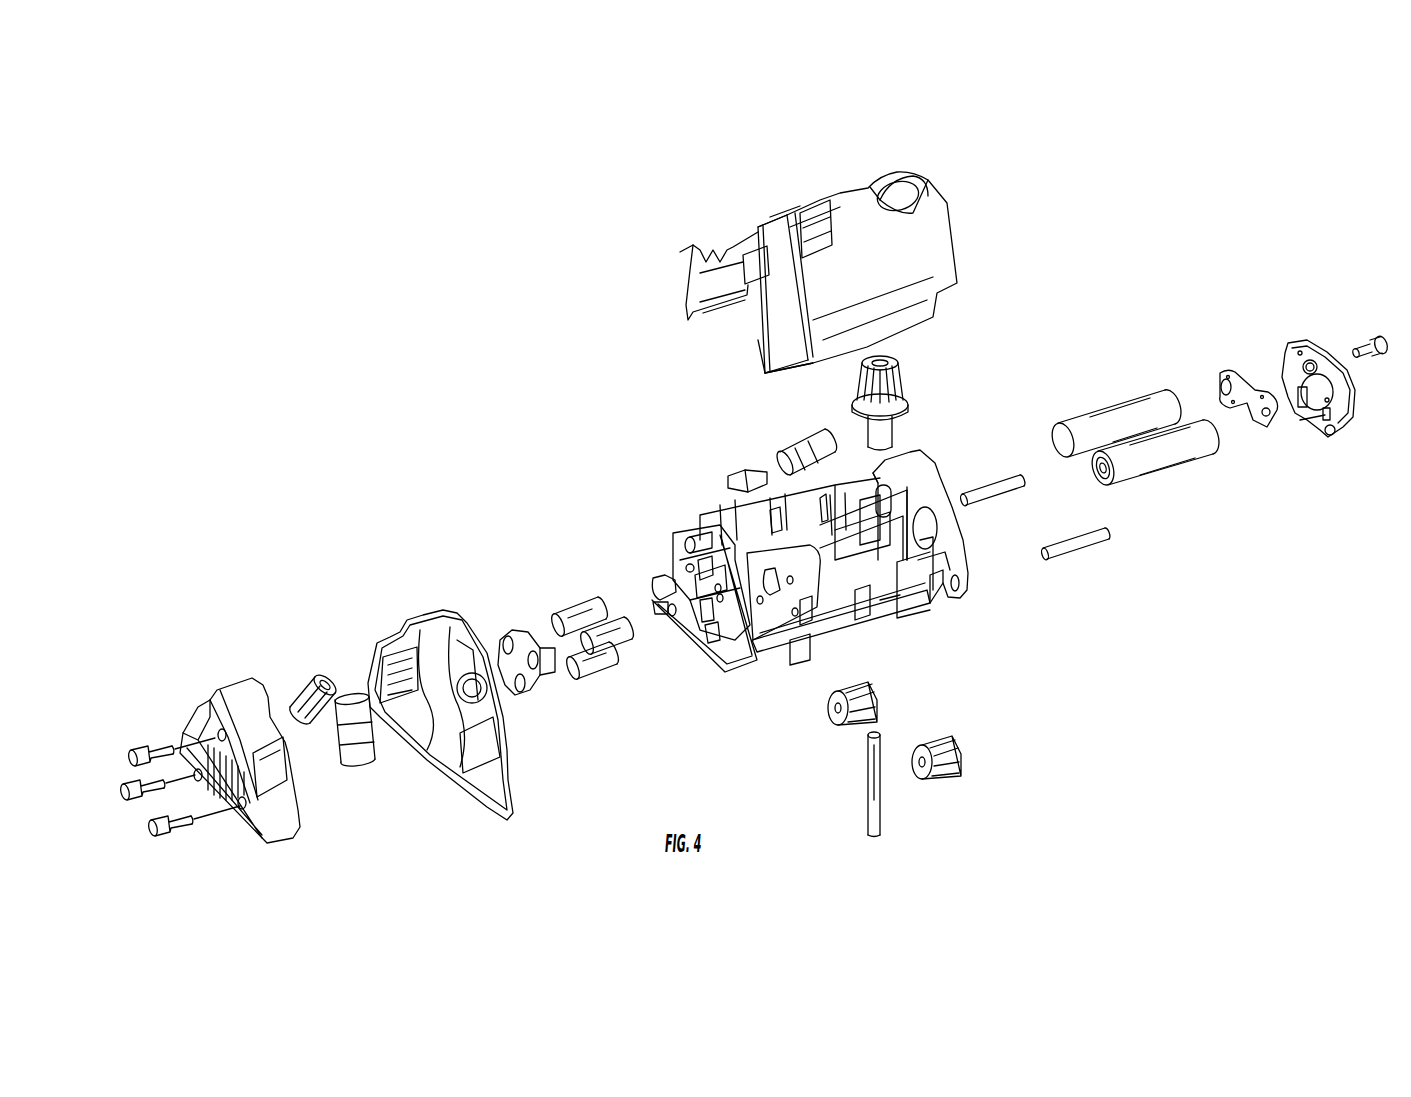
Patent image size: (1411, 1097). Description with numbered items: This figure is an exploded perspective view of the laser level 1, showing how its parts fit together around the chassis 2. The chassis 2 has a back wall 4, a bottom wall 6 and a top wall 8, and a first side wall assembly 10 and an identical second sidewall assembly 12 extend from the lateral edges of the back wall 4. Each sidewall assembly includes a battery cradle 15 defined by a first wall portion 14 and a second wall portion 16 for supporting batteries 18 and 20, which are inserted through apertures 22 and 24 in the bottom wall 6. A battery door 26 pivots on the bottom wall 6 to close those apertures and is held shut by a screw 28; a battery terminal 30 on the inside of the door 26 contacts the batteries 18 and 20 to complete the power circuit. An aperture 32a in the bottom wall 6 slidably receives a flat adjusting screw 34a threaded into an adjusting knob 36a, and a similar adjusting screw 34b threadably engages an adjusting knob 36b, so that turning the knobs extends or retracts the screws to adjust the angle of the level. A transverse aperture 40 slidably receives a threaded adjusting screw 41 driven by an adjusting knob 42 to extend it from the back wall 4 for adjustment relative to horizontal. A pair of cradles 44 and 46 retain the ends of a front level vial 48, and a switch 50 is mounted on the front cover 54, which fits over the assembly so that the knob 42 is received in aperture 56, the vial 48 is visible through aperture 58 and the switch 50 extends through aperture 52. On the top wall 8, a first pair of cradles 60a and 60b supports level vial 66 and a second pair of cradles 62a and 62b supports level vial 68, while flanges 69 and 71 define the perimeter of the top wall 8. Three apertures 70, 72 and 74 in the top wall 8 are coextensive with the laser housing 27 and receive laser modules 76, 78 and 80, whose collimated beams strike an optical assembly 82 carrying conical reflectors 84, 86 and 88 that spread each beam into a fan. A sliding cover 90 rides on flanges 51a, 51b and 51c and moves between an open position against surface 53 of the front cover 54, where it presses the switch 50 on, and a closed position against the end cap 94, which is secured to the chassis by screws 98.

The laser level 1 is at (469, 313).
The chassis 2 is at (938, 455).
The back wall 4 is at (795, 650).
The bottom wall 6 is at (950, 530).
The top wall 8 is at (725, 650).
The first side wall assembly 10 is at (880, 585).
The second sidewall assembly 12 is at (860, 500).
The first wall portion 14 is at (900, 615).
The battery cradle 15 is at (805, 600).
The second wall portion 16 is at (860, 590).
The battery 18 is at (1170, 455).
The battery 20 is at (1135, 400).
The aperture 22 is at (920, 538).
The aperture 24 is at (870, 500).
The battery door 26 is at (1340, 420).
The laser housing 27 is at (770, 610).
The screw 28 is at (1385, 335).
The battery terminal 30 is at (1262, 425).
The aperture 32a is at (970, 598).
The adjusting screw 34a is at (1082, 543).
The adjusting screw 34b is at (1000, 480).
The adjusting knob 36a is at (960, 750).
The adjusting knob 36b is at (835, 715).
The transverse aperture 40 is at (940, 560).
The adjusting screw 41 is at (876, 817).
The adjusting knob 42 is at (905, 403).
The cradle 44 is at (775, 525).
The cradle 46 is at (820, 505).
The front level vial 48 is at (810, 440).
The switch 50 is at (745, 475).
The flange 51a is at (700, 240).
The flange 51b is at (688, 318).
The flange 51c is at (760, 378).
The aperture 52 is at (757, 250).
The surface 53 is at (800, 295).
The front cover 54 is at (930, 258).
The aperture 56 is at (878, 200).
The aperture 58 is at (802, 215).
The cradle 60a is at (660, 585).
The cradle 60b is at (655, 540).
The cradle 62a is at (700, 630).
The cradle 62b is at (700, 540).
The level vial 66 is at (303, 690).
The level vial 68 is at (355, 740).
The flange 69 is at (660, 625).
The aperture 70 is at (690, 610).
The flange 71 is at (680, 505).
The aperture 72 is at (655, 608).
The aperture 74 is at (660, 565).
The laser module 76 is at (588, 675).
The laser module 78 is at (606, 650).
The laser module 80 is at (580, 610).
The optical assembly 82 is at (513, 618).
The conical reflector 84 is at (521, 693).
The conical reflector 86 is at (533, 670).
The conical reflector 88 is at (506, 640).
The sliding cover 90 is at (427, 610).
The end cap 94 is at (235, 695).
The screws 98 is at (180, 810).